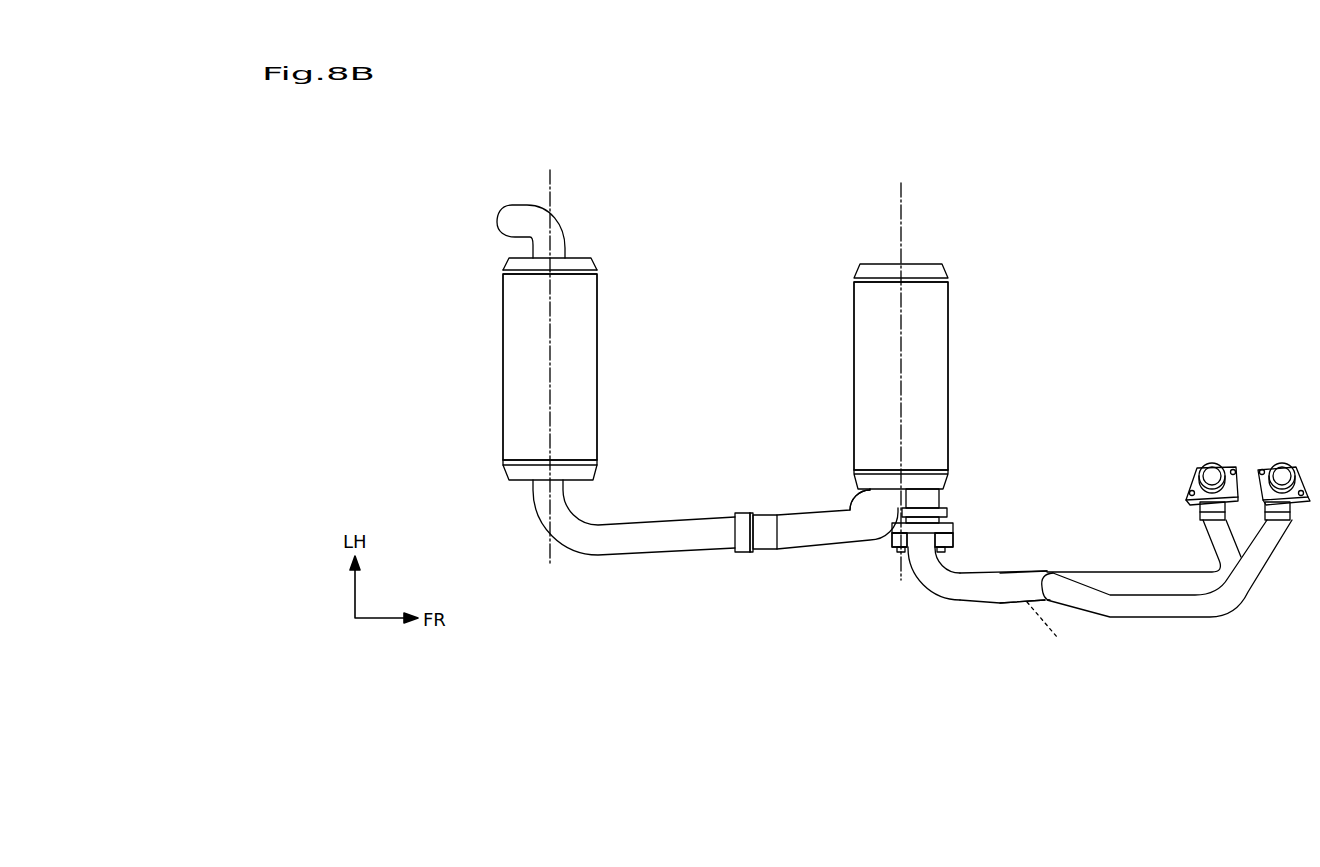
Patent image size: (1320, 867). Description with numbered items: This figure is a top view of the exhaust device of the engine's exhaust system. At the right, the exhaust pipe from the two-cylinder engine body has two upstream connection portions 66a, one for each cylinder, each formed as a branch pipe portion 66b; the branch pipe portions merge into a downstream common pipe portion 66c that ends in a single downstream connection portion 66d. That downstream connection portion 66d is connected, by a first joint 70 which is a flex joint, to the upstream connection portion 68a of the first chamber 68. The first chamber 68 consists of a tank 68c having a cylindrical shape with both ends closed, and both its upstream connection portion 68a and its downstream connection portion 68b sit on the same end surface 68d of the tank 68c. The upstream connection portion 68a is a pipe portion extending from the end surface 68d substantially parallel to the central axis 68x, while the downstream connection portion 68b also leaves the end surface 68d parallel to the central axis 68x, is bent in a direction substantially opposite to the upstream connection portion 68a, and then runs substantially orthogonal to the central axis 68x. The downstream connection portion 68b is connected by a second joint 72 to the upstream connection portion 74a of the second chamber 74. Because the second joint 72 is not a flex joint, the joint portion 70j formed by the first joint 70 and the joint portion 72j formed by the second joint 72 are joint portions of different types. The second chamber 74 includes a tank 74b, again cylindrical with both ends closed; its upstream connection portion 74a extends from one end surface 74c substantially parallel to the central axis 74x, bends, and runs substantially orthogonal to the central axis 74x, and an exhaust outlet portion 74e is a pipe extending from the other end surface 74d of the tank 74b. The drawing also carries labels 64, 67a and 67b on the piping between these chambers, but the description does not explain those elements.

The exhaust pipe 64 is at (1046, 633).
The upstream connection portion 66a is at (1197, 473).
The branch pipe portion 66b is at (1147, 580).
The downstream common pipe portion 66c is at (1002, 607).
The downstream connection portion 66d is at (921, 556).
The connecting pipe 67a is at (955, 598).
The connecting pipe 67b is at (797, 541).
The first chamber 68 is at (938, 331).
The upstream connection portion 68a is at (942, 503).
The downstream connection portion 68b is at (767, 518).
The tank 68c is at (937, 399).
The end surface 68d is at (864, 497).
The central axis 68x is at (903, 217).
The first joint 70 is at (955, 524).
The joint portion 70j is at (957, 549).
The second joint 72 is at (742, 552).
The joint portion 72j is at (748, 588).
The second chamber 74 is at (583, 318).
The upstream connection portion 74a is at (637, 556).
The tank 74b is at (577, 354).
The end surface 74c is at (520, 484).
The end surface 74d is at (579, 251).
The exhaust outlet portion 74e is at (502, 224).
The central axis 74x is at (552, 187).